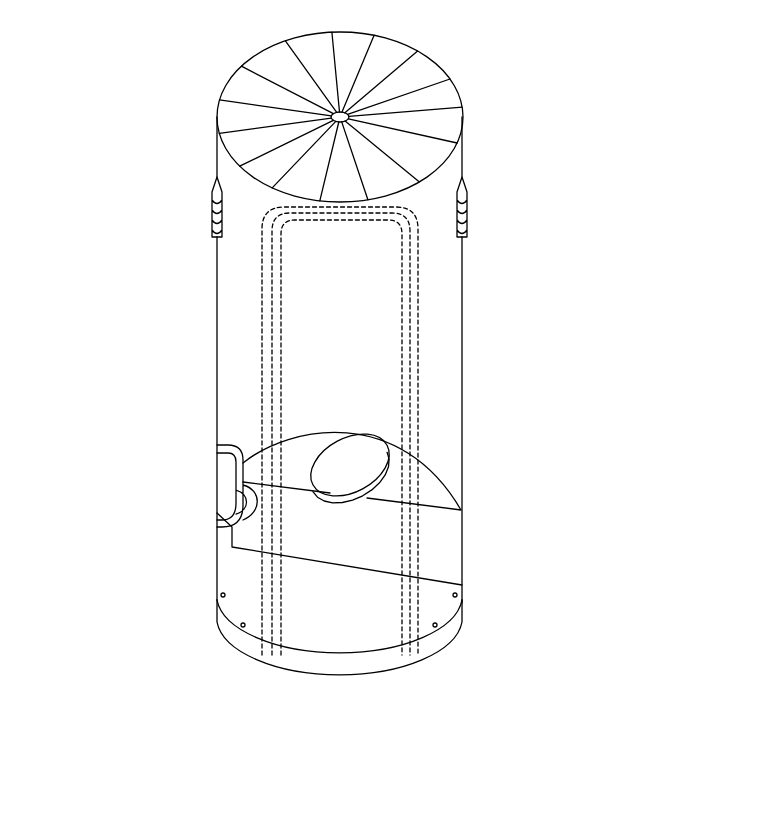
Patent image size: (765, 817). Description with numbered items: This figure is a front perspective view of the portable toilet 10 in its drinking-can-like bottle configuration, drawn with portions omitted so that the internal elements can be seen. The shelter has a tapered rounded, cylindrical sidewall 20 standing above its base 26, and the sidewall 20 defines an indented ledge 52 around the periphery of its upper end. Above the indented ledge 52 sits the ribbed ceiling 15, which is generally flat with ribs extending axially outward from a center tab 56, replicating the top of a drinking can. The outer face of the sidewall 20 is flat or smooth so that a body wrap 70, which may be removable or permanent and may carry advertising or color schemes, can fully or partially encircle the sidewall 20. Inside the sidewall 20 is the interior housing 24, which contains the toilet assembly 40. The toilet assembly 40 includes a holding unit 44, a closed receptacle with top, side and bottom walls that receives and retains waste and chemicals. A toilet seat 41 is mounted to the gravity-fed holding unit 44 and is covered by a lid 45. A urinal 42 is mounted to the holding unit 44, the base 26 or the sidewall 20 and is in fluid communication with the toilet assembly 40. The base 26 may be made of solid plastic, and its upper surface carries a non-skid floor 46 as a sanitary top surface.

The portable toilet 10 is at (230, 173).
The ribbed ceiling 15 is at (247, 102).
The sidewall 20 is at (457, 373).
The interior housing 24 is at (375, 272).
The base 26 is at (295, 668).
The toilet assembly 40 is at (467, 655).
The seat 41 is at (341, 500).
The urinal 42 is at (228, 472).
The holding unit 44 is at (450, 532).
The lid 45 is at (367, 452).
The non-skid floor 46 is at (305, 603).
The indented ledge 52 is at (463, 140).
The center tab 56 is at (346, 112).
The body wrap 70 is at (463, 340).